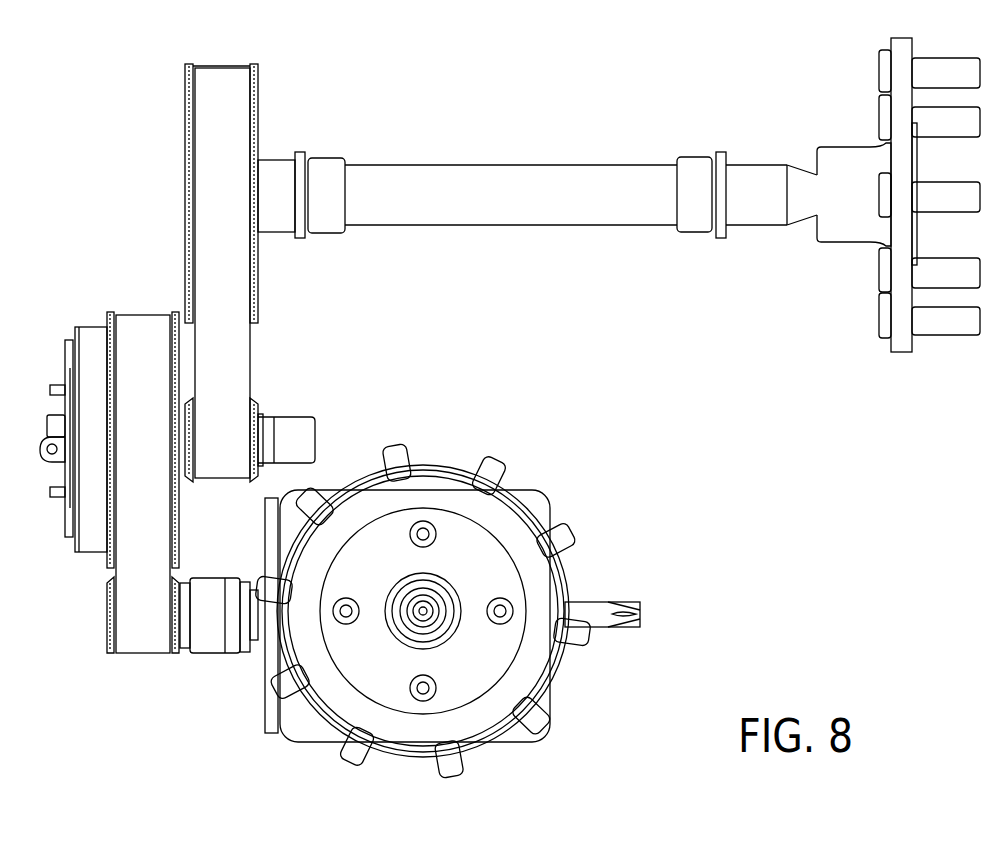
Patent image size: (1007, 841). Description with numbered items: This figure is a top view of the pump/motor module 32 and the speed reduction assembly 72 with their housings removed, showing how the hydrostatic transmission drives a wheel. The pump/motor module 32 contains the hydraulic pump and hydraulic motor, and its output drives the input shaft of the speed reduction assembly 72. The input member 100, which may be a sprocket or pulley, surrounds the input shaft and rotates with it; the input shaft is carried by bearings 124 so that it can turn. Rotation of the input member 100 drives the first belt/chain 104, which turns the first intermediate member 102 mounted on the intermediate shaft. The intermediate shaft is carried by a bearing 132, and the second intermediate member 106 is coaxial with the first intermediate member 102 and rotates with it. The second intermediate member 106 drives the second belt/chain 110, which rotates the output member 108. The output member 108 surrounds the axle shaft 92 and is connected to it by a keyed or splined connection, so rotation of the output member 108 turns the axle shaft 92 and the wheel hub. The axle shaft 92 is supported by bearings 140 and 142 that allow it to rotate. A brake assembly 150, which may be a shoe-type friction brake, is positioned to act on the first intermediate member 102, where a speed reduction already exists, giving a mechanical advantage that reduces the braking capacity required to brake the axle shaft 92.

The pump/motor module 32 is at (600, 568).
The speed reduction assembly 72 is at (127, 206).
The axle shaft 92 is at (560, 164).
The input member 100 is at (113, 655).
The first intermediate member 102 is at (97, 553).
The first belt/chain 104 is at (143, 312).
The second intermediate member 106 is at (257, 408).
The output member 108 is at (259, 291).
The second belt/chain 110 is at (218, 80).
The bearings 124 is at (218, 655).
The bearing 132 is at (302, 424).
The bearing 140 is at (328, 160).
The bearing 142 is at (693, 157).
The brake assembly 150 is at (88, 326).